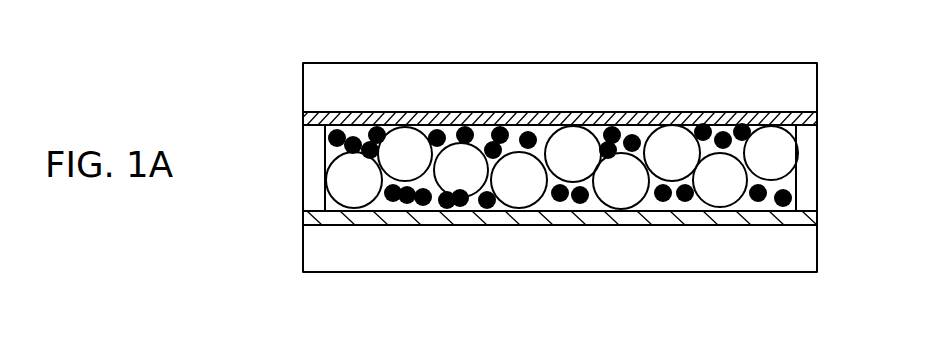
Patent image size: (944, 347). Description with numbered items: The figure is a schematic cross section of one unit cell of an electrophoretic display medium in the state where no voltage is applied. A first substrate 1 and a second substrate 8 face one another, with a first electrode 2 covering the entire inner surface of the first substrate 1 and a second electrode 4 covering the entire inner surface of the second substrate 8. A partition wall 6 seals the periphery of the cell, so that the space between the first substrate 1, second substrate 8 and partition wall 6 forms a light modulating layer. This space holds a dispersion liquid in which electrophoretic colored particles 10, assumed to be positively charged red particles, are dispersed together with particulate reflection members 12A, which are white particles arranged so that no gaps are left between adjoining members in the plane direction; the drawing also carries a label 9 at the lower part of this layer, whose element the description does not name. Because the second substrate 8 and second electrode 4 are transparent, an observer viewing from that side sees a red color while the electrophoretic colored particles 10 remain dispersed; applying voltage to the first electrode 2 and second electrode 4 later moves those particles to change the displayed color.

The first substrate 1 is at (812, 253).
The first electrode 2 is at (812, 218).
The second electrode 4 is at (812, 120).
The partition wall 6 is at (312, 167).
The second substrate 8 is at (812, 88).
The black particles 9 is at (381, 203).
The electrophoretic colored particles 10 is at (562, 169).
The particulate reflection members 12A is at (672, 140).